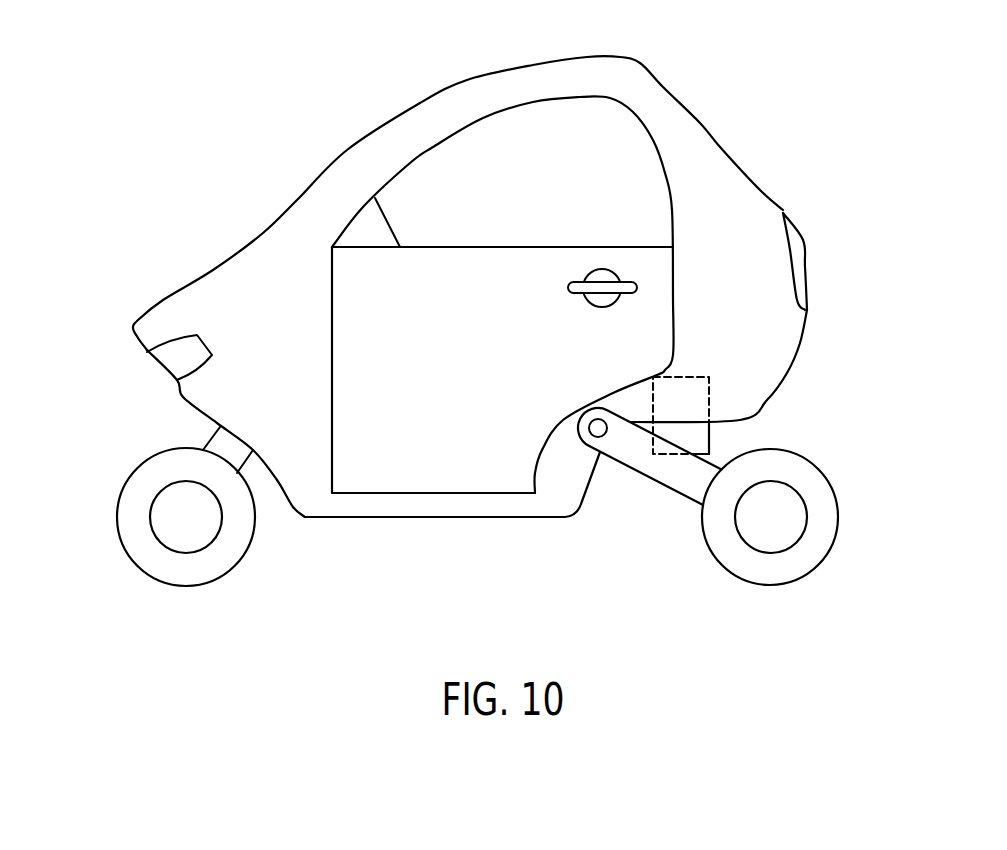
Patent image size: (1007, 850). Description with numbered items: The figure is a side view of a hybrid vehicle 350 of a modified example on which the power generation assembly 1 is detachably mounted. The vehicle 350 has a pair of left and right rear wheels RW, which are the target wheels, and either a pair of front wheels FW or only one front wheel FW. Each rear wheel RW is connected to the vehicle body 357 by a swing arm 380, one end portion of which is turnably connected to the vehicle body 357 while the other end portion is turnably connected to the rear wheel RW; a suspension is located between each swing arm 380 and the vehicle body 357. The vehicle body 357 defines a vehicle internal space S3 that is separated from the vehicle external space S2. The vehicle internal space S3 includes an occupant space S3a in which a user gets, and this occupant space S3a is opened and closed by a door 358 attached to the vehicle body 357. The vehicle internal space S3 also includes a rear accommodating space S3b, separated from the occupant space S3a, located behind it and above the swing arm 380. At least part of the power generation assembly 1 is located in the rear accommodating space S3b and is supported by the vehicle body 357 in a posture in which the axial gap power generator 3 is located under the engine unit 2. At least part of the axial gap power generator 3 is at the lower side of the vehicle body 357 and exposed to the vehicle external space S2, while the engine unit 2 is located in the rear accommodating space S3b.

The hybrid vehicle 350 is at (279, 123).
The vehicle body 357 is at (340, 518).
The door 358 is at (457, 467).
The swing arm 380 is at (673, 477).
The power generation assembly 1 is at (794, 400).
The engine unit 2 is at (712, 395).
The axial gap power generator 3 is at (712, 438).
The vehicle external space S2 is at (543, 589).
The vehicle internal space S3 is at (747, 182).
The occupant space S3a is at (627, 222).
The rear accommodating space S3b is at (730, 353).
The front wheel FW is at (117, 514).
The rear wheel RW is at (838, 516).